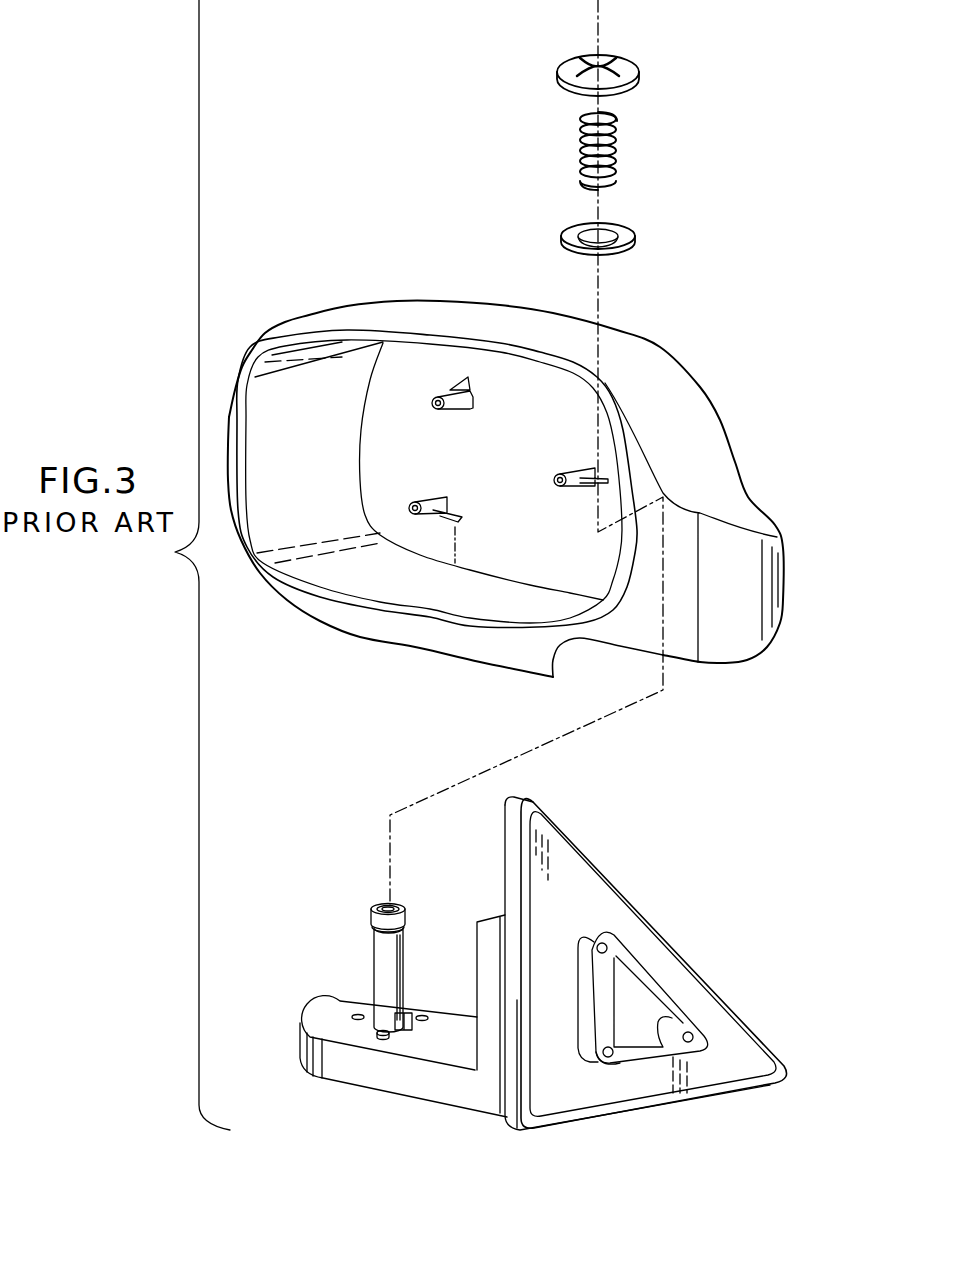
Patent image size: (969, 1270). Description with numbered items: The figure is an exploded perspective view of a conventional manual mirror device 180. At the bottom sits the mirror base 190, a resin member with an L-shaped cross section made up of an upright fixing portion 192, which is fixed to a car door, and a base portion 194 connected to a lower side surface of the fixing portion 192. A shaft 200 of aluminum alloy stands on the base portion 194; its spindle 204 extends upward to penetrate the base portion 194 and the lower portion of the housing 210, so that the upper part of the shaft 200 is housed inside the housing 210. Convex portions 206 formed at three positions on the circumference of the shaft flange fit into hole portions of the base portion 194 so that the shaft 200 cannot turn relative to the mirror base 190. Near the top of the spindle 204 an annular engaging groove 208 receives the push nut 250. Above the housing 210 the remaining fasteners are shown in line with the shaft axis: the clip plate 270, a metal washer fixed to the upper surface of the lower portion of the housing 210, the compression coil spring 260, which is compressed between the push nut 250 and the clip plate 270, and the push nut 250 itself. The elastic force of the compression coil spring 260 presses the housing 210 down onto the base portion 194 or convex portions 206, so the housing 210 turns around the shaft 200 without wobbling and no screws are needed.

The manual mirror device 180 is at (738, 116).
The push nut 250 is at (645, 74).
The compression coil spring 260 is at (618, 141).
The clip plate 270 is at (636, 233).
The housing 210 is at (421, 312).
The mirror base 190 is at (686, 923).
The fixing portion 192 is at (562, 867).
The base portion 194 is at (300, 1048).
The shaft 200 is at (364, 948).
The spindle 204 is at (377, 983).
The convex portions 206 is at (382, 1038).
The annular engaging groove 208 is at (371, 921).